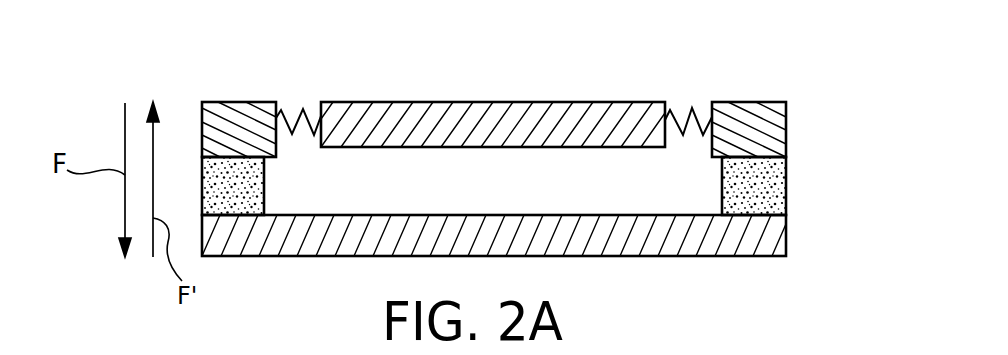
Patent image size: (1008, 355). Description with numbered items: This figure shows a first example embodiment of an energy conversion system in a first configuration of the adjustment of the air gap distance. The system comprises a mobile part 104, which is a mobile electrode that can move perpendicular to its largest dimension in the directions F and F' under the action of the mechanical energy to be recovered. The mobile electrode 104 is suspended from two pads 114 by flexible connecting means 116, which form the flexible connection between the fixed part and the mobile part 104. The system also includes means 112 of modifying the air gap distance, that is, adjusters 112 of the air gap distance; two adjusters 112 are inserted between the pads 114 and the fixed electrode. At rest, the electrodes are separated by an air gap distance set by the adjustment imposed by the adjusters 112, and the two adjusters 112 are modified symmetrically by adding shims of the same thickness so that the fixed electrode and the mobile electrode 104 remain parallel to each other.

The mobile part 104 is at (487, 117).
The adjuster 112 is at (195, 172).
The pad 114 is at (245, 118).
The flexible connecting means 116 is at (293, 115).